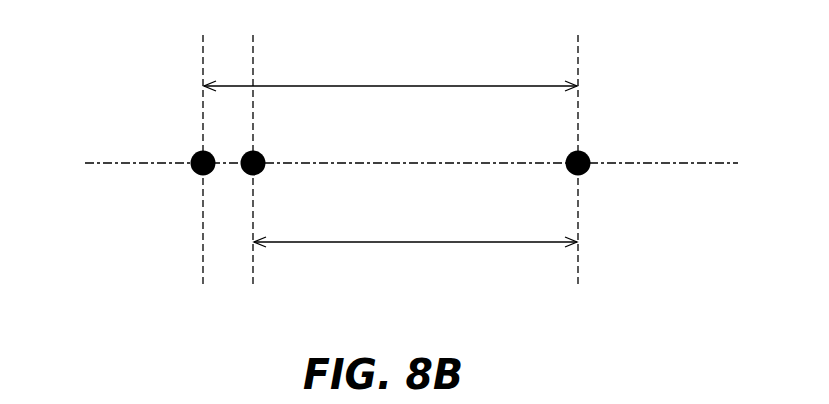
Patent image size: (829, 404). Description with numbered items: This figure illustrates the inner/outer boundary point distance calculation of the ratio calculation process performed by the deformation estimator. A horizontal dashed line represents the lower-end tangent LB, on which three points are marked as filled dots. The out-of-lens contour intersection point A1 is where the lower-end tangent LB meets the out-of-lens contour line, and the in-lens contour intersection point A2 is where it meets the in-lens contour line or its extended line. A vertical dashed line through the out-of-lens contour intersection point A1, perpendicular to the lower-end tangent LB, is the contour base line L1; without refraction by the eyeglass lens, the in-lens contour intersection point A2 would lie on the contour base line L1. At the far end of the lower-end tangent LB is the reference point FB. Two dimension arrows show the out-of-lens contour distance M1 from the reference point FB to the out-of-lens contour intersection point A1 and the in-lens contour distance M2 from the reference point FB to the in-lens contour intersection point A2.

The lower-end tangent LB is at (389, 162).
The contour base line L1 is at (207, 182).
The out-of-lens contour intersection point A1 is at (188, 170).
The in-lens contour intersection point A2 is at (267, 168).
The reference point FB is at (593, 168).
The out-of-lens contour distance M1 is at (390, 69).
The in-lens contour distance M2 is at (415, 226).